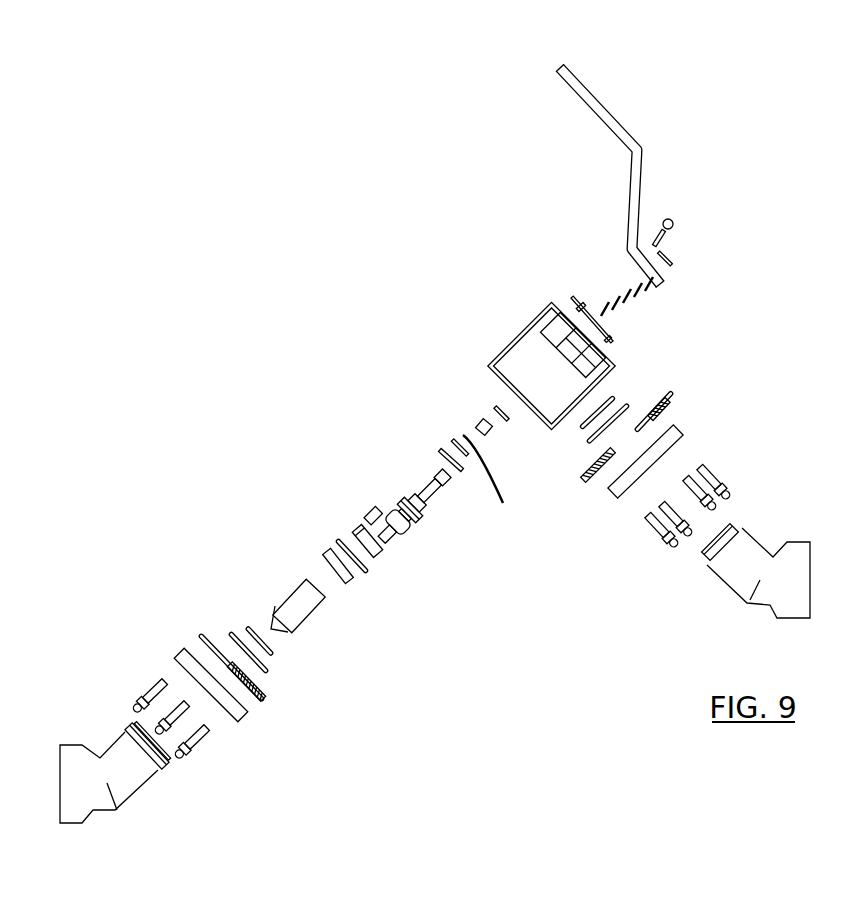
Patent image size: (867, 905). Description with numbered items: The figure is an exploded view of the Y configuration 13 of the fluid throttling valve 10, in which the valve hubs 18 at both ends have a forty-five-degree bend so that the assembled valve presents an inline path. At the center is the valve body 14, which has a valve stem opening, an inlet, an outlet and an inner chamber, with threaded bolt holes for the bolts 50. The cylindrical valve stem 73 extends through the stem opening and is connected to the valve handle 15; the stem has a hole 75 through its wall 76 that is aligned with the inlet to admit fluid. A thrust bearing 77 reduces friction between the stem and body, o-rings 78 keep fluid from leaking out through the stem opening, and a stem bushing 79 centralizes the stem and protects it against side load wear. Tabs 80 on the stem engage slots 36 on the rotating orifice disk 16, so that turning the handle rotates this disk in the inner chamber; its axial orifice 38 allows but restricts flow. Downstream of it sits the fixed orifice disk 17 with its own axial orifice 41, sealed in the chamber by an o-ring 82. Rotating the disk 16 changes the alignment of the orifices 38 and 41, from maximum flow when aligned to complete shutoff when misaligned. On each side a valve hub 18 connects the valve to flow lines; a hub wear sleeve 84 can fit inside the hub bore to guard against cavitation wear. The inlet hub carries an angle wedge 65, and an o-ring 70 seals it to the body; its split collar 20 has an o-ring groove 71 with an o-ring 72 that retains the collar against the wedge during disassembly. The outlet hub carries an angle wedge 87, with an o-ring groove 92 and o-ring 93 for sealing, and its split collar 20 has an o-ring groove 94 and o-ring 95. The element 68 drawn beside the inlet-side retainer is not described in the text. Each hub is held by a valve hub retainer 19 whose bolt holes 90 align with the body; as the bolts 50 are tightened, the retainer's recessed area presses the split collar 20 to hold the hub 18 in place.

The fluid throttling valve 10 is at (268, 313).
The Y configuration 13 is at (634, 349).
The valve body 14 is at (488, 366).
The valve handle 15 is at (632, 200).
The rotating orifice disk 16 is at (378, 551).
The fixed orifice disk 17 is at (352, 583).
The valve hub 18 is at (429, 662).
The valve hub retainer 19 is at (430, 585).
The valve hub split collar 20 is at (668, 398).
The slots 36 is at (404, 531).
The axial orifice 38 is at (353, 564).
The axial orifice 41 is at (327, 589).
The bolts 50 is at (722, 474).
The angle wedge 65 is at (707, 563).
The tube 68 is at (620, 500).
The o-ring 70 is at (613, 398).
The o-ring groove 71 is at (672, 392).
The o-ring 72 is at (588, 441).
The valve stem 73 is at (399, 522).
The hole 75 is at (433, 550).
The wall 76 is at (380, 517).
The thrust bearing 77 is at (440, 450).
The o-rings 78 is at (502, 418).
The stem bushing 79 is at (475, 425).
The tabs 80 is at (365, 512).
The o-ring 82 is at (367, 573).
The hub wear sleeve 84 is at (301, 623).
The angle wedge 87 is at (127, 728).
The bolt holes 90 is at (178, 667).
The o-ring groove 92 is at (138, 731).
The o-ring 93 is at (247, 628).
The o-ring groove 94 is at (200, 635).
The o-ring 95 is at (267, 672).